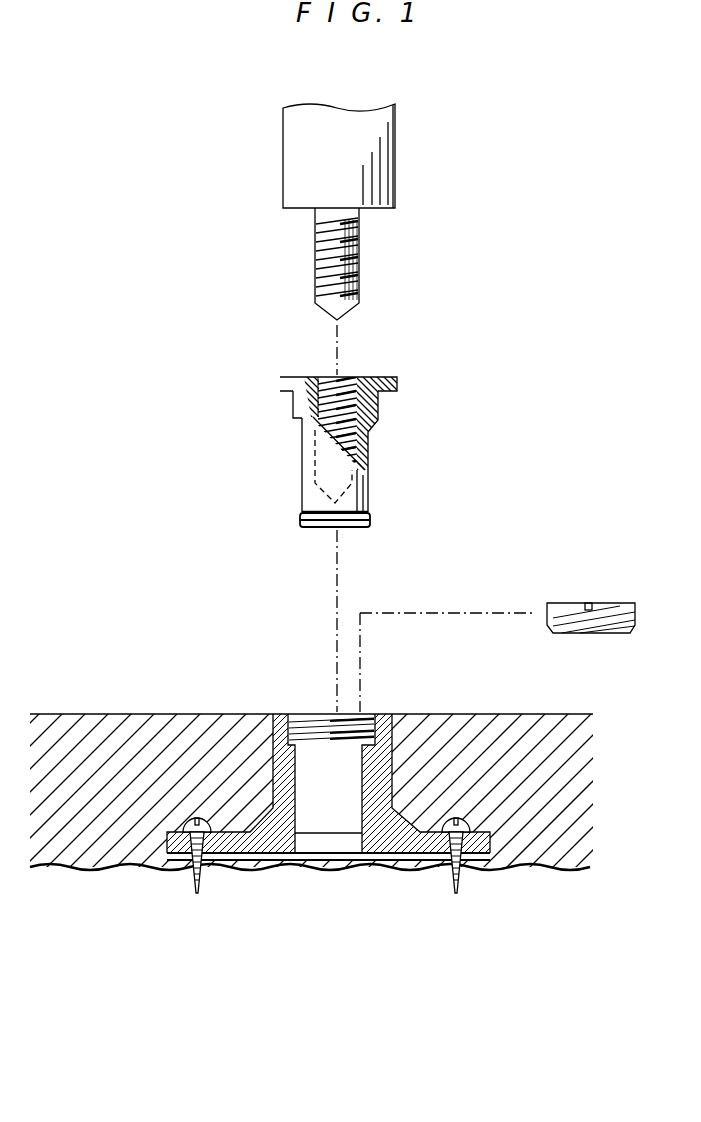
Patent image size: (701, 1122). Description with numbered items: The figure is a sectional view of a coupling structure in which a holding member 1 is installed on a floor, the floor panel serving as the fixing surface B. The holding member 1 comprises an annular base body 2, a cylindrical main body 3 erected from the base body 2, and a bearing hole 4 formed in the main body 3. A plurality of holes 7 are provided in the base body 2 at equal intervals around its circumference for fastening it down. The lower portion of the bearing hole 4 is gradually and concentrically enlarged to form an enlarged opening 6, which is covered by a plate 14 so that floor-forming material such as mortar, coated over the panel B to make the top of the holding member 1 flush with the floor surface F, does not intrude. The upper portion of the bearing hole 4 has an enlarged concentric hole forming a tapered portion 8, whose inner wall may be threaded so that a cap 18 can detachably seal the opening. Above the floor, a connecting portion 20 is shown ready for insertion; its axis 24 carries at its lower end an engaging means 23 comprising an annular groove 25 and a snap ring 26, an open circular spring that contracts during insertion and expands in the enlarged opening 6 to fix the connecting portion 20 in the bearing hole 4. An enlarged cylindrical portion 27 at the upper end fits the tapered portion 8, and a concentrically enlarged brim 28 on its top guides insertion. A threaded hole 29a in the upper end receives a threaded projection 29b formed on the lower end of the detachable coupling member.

The holding member 1 is at (414, 696).
The annular base body 2 is at (331, 795).
The cylindrical main body 3 is at (268, 772).
The bearing hole 4 is at (312, 765).
The enlarged opening 6 is at (328, 905).
The holes 7 is at (496, 845).
The tapered portion 8 is at (272, 742).
The plate 14 is at (232, 868).
The cap 18 is at (613, 603).
The connecting portion 20 is at (402, 217).
The engaging means 23 is at (348, 448).
The axis of the connecting portion 24 is at (368, 455).
The annular groove 25 is at (303, 516).
The snap ring 26 is at (370, 518).
The enlarged cylindrical portion 27 is at (378, 418).
The concentrically enlarged brim 28 is at (397, 378).
The threaded hole 29a is at (338, 390).
The threaded projection 29b is at (358, 252).
The fixing surface (panel) B is at (386, 987).
The floor surface F is at (528, 713).